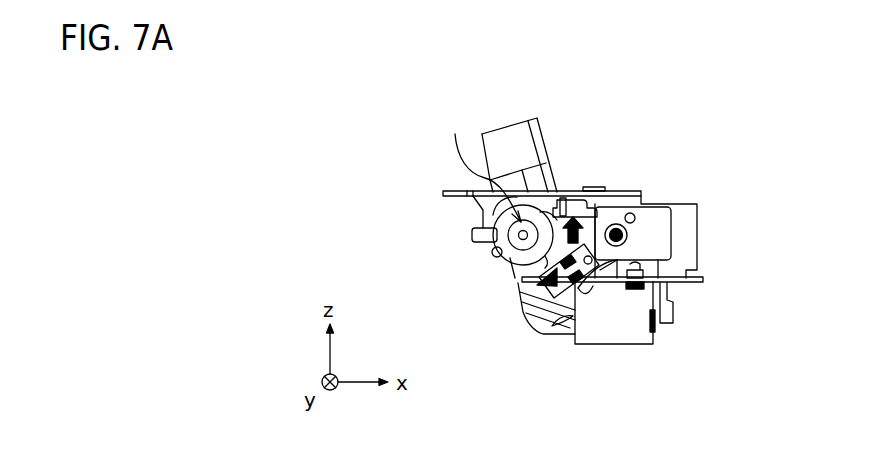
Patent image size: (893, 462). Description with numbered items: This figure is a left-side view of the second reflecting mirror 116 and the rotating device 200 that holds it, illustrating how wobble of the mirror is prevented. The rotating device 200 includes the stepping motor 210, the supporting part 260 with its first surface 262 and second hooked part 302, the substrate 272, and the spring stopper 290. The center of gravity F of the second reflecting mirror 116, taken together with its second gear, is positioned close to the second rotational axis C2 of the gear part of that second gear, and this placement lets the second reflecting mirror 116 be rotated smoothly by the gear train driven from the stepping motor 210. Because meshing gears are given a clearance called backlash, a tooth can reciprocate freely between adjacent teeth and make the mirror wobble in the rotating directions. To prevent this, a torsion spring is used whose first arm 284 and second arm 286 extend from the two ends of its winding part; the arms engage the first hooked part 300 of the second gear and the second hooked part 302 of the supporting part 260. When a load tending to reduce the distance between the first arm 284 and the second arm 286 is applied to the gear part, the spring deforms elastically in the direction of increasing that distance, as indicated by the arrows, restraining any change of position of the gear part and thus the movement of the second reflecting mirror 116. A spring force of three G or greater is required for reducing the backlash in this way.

The second reflecting mirror 116 is at (508, 138).
The center of gravity F is at (485, 167).
The second arm 286 is at (551, 199).
The second hooked part 302 is at (568, 205).
The first surface 262 is at (612, 197).
The supporting part 260 is at (630, 197).
The substrate 272 is at (656, 243).
The second rotational axis C2 is at (514, 226).
The spring stopper 290 is at (513, 260).
The first hooked part 300 is at (545, 312).
The first arm 284 is at (593, 268).
The rotating device 200 is at (604, 361).
The stepping motor 210 is at (638, 338).